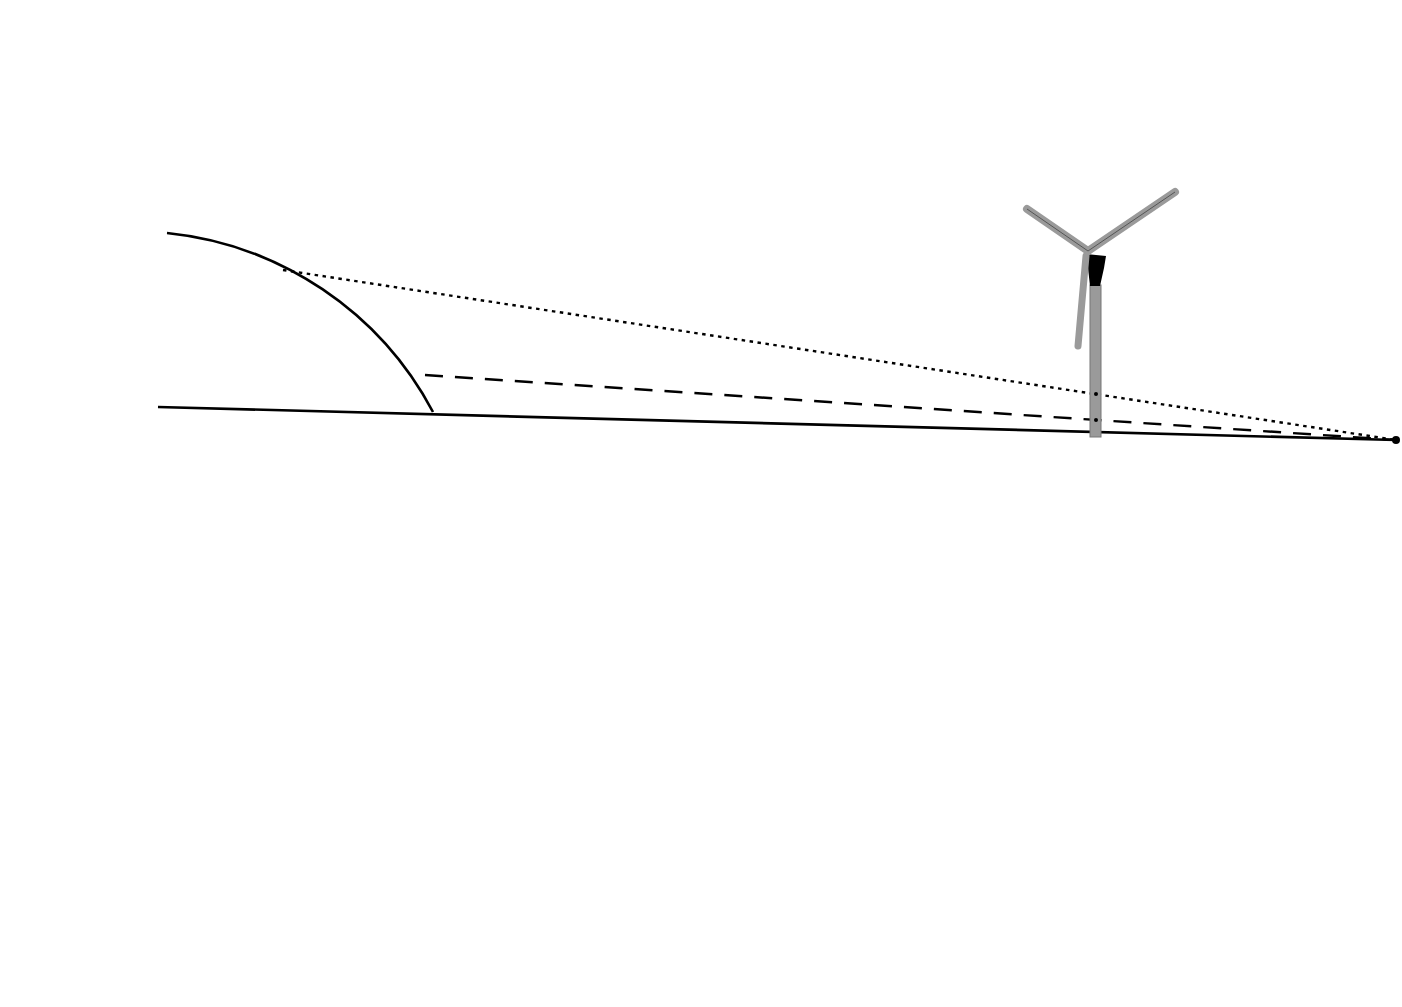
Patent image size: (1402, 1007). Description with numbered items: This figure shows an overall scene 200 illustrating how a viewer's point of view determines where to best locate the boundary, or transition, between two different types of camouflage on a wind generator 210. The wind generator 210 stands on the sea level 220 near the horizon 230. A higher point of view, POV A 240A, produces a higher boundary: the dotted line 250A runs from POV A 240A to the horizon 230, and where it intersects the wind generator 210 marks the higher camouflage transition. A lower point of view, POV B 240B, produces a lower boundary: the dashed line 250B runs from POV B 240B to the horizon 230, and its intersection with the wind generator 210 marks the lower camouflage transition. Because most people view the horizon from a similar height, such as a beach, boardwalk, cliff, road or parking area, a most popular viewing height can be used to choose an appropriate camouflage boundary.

The offshore wind turbine camouflage environment 200 is at (779, 394).
The wind generator 210 is at (1082, 179).
The sea level 220 is at (786, 426).
The horizon 230 is at (1394, 452).
The point of view (POV) A 240A is at (286, 267).
The point of view (POV) B 240B is at (403, 372).
The dotted line 250A is at (1107, 390).
The dashed line 250B is at (1088, 418).